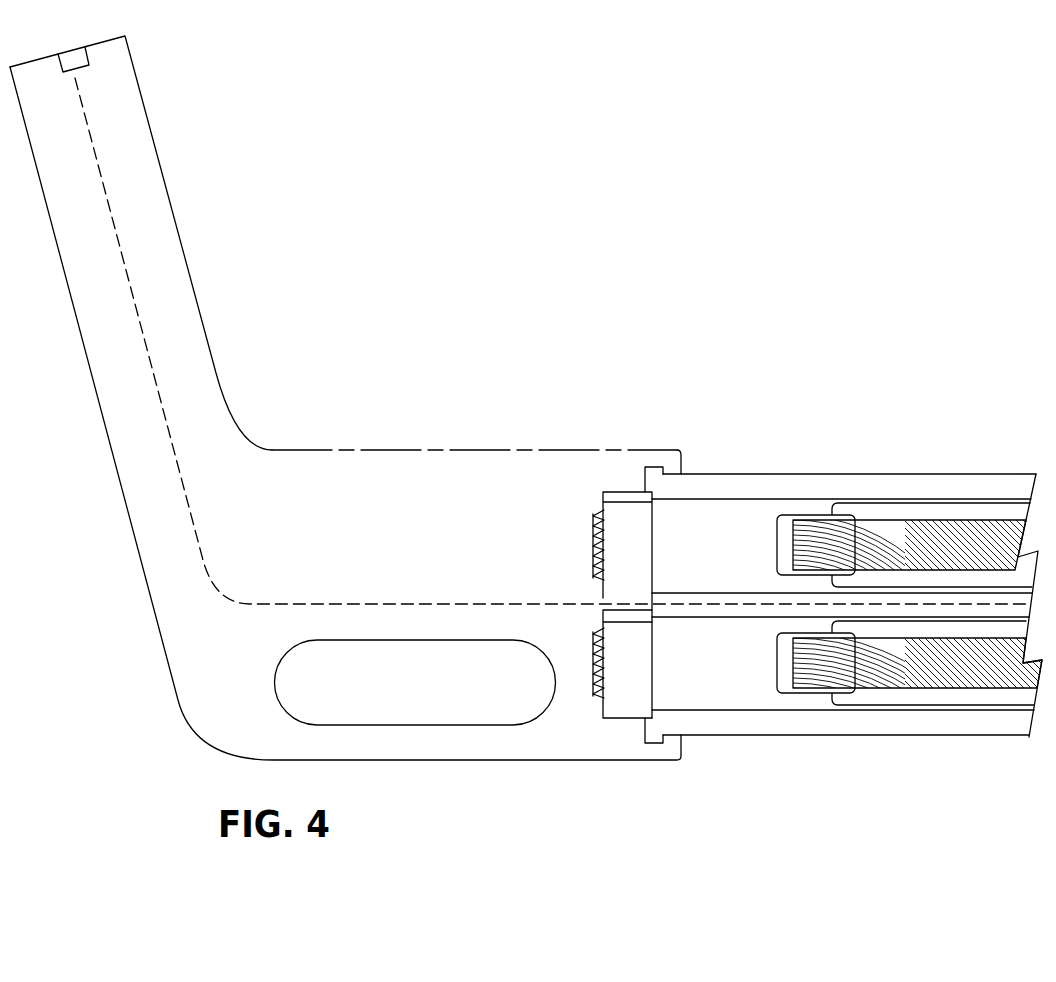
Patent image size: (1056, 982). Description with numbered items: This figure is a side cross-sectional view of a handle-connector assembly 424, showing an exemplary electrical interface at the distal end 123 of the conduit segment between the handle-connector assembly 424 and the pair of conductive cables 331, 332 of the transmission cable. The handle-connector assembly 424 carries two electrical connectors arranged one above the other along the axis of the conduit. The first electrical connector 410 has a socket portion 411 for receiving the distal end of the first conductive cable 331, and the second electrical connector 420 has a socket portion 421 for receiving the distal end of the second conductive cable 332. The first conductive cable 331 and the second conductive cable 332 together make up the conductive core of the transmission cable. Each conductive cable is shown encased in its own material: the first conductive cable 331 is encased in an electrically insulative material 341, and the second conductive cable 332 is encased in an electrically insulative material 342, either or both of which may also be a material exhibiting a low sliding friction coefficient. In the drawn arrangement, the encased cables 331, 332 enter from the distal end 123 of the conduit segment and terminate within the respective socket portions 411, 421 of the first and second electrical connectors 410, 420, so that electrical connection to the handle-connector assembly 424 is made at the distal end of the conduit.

The handle-connector assembly 424 is at (384, 397).
The first electrical connector 410 is at (715, 527).
The second electrical connector 420 is at (723, 680).
The socket portion 411 is at (786, 516).
The socket portion 421 is at (787, 690).
The first conductive cable 331 is at (890, 535).
The second conductive cable 332 is at (875, 670).
The electrically insulative material 341 is at (932, 512).
The electrically insulative material 342 is at (950, 695).
The distal end 123 is at (989, 470).